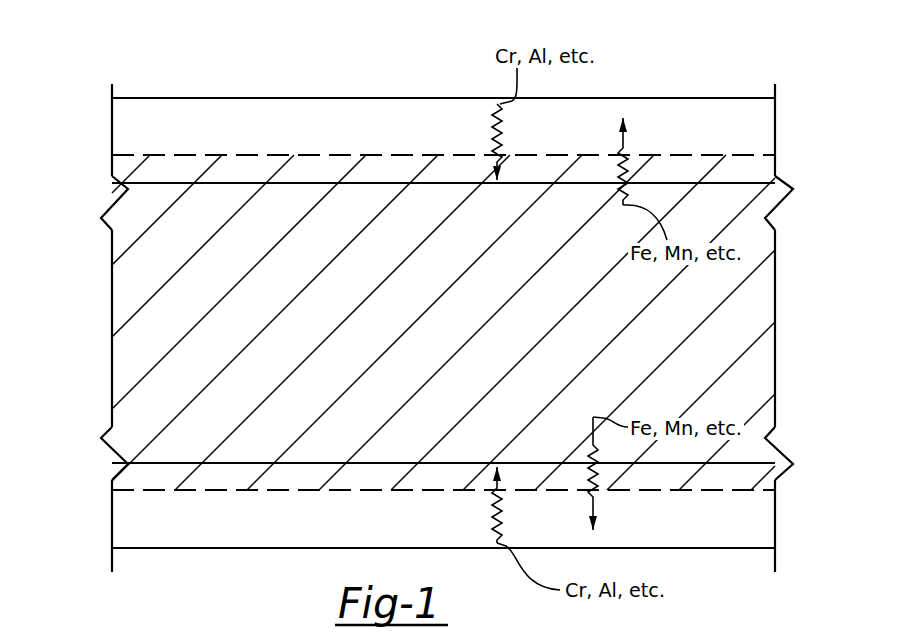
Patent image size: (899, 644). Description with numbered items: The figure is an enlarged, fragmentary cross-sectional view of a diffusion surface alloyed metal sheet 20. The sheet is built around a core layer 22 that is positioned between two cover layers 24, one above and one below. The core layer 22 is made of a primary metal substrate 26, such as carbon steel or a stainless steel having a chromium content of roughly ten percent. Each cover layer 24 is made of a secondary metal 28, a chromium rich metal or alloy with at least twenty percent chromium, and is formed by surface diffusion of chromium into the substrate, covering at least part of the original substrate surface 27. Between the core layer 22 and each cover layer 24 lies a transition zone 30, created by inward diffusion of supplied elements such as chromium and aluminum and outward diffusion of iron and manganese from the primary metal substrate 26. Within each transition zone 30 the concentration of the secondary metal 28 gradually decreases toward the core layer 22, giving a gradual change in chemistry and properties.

The diffusion surface alloyed metal sheet 20 is at (175, 77).
The core layer 22 is at (112, 320).
The cover layer 24 is at (112, 119).
The primary metal substrate 26 is at (740, 325).
The original substrate surface 27 is at (700, 155).
The secondary metal 28 is at (665, 118).
The transition zone 30 is at (775, 168).